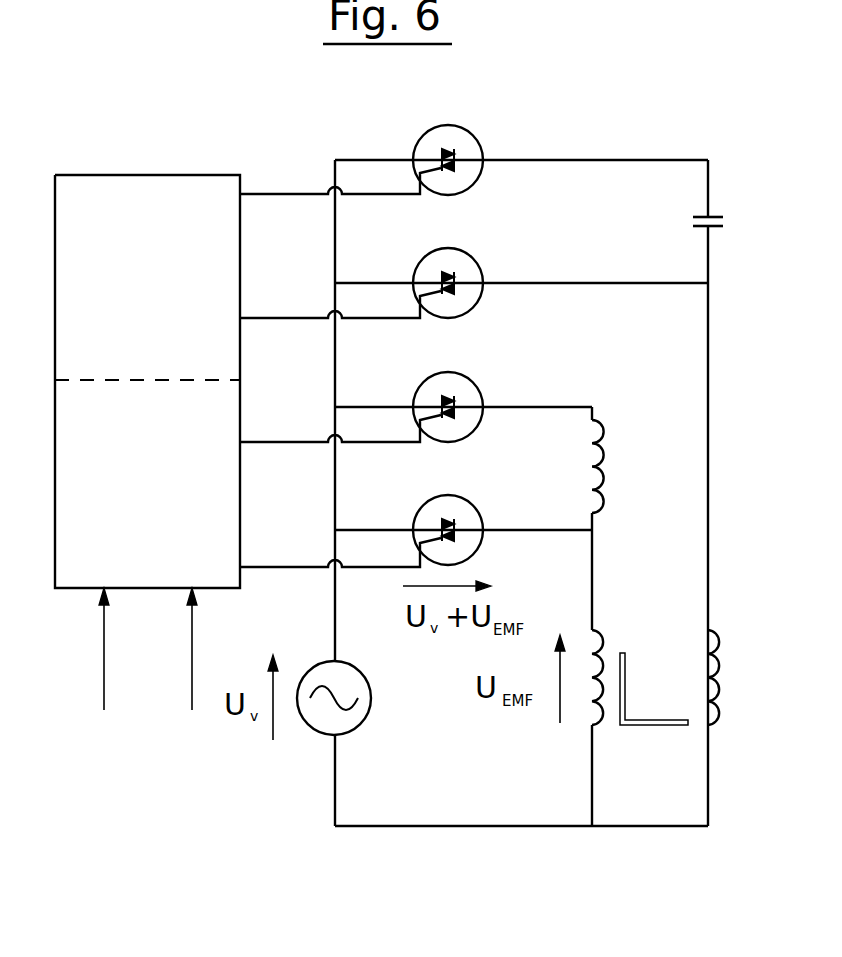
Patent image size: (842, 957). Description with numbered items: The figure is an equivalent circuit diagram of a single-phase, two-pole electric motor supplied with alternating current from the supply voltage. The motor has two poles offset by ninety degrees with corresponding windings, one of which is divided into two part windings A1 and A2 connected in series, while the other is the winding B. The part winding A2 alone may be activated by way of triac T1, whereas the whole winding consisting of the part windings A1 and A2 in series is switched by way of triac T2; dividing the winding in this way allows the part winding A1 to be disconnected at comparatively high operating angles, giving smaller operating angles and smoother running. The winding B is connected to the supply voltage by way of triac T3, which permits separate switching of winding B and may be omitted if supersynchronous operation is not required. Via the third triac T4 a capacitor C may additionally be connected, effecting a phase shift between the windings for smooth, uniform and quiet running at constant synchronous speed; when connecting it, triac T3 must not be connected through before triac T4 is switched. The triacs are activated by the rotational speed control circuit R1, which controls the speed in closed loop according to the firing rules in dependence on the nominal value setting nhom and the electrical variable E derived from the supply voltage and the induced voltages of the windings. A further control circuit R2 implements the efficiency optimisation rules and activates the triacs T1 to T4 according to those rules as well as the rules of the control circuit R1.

The triac T1 is at (473, 532).
The triac T2 is at (473, 409).
The triac T3 is at (473, 285).
The third triac T4 is at (473, 162).
The part winding A1 is at (605, 430).
The part winding A2 is at (605, 640).
The winding B is at (722, 640).
The capacitor C is at (722, 215).
The rotational speed control circuit R1 is at (248, 484).
The further control circuit R2 is at (248, 274).
The electrical variable E is at (196, 673).
The nominal value setting nhom is at (123, 672).